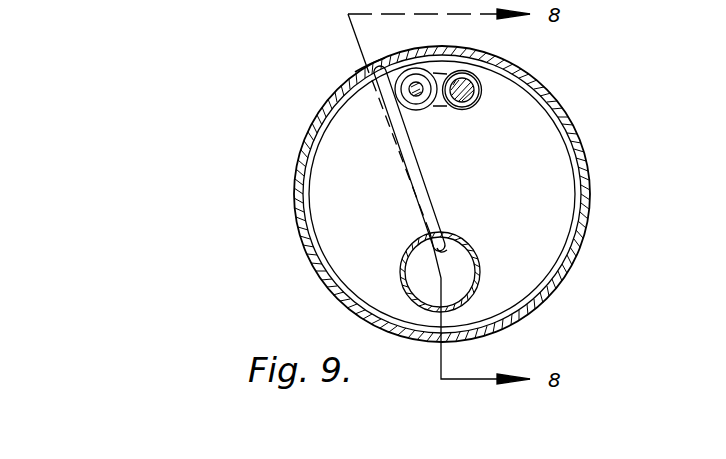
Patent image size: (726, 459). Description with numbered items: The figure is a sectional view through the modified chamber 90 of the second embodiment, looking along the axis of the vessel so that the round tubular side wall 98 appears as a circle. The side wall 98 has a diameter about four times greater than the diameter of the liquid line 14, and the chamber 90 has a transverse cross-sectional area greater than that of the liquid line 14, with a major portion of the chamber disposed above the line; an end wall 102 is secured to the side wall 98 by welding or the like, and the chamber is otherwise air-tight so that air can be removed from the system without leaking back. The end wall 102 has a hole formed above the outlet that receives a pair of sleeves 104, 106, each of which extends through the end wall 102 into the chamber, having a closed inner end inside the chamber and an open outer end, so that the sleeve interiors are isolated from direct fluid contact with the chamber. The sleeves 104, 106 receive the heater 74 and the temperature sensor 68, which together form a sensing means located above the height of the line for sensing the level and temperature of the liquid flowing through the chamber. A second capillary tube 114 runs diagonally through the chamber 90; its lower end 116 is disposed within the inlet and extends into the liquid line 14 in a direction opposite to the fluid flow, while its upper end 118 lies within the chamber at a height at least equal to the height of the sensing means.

The liquid line 14 is at (388, 266).
The temperature sensor 68 is at (403, 98).
The heater 74 is at (473, 103).
The chamber 90 is at (600, 192).
The tubular side wall 98 is at (303, 183).
The end wall 102 is at (295, 228).
The sleeve 104 is at (468, 108).
The sleeve 106 is at (410, 69).
The second capillary tube 114 is at (423, 202).
The lower end 116 is at (447, 250).
The upper end 118 is at (363, 62).